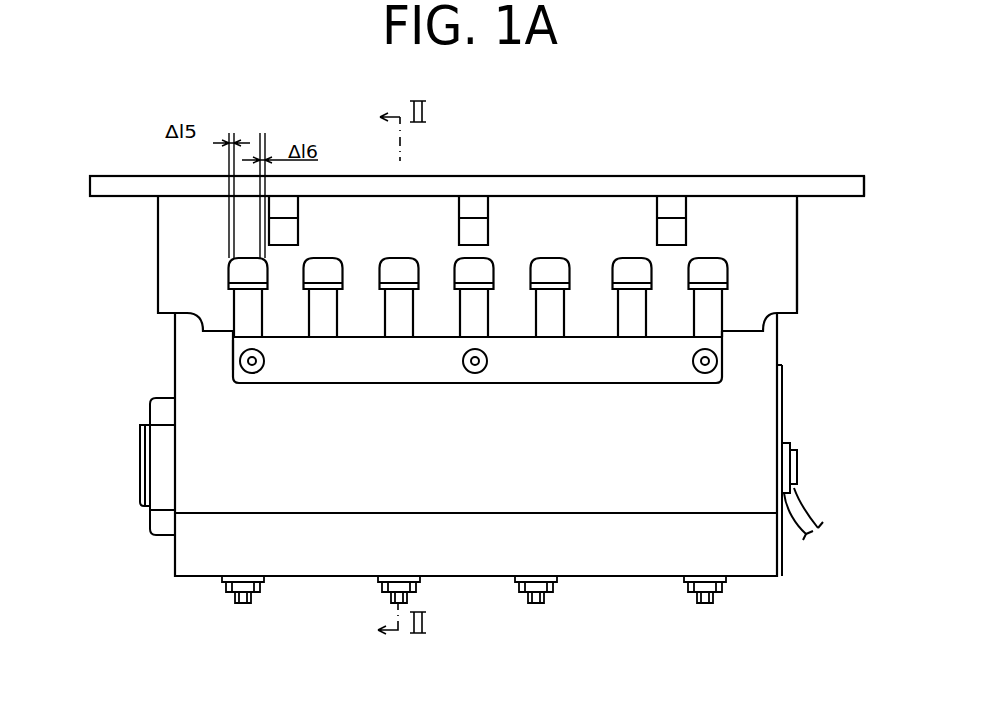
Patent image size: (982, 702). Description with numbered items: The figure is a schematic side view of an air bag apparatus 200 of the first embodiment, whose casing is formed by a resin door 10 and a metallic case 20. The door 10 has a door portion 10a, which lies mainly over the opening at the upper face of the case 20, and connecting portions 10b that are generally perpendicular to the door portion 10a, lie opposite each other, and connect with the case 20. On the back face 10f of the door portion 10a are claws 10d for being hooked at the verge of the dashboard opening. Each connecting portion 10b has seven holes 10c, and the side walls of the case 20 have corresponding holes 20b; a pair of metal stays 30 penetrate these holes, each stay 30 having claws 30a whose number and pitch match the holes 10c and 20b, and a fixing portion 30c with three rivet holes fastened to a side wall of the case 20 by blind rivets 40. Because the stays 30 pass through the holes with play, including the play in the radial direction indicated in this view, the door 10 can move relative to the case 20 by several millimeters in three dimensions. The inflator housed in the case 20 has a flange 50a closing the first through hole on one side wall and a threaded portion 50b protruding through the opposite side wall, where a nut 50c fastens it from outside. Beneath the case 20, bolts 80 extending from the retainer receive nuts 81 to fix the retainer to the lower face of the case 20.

The air bag apparatus 200 is at (106, 295).
The door 10 is at (763, 176).
The door portion 10a is at (866, 190).
The connecting portions 10b is at (778, 300).
The holes 10c is at (553, 280).
The claws 10d is at (678, 236).
The back face 10f is at (822, 197).
The case 20 is at (778, 339).
The holes 20b is at (568, 289).
The stays 30 is at (510, 357).
The claws 30a is at (320, 287).
The fixing portion 30c is at (233, 353).
The blind rivets 40 is at (710, 362).
The flange 50a is at (783, 555).
The threaded portion 50b is at (140, 487).
The nut 50c is at (160, 536).
The bolts 80 is at (714, 597).
The nuts 81 is at (682, 584).